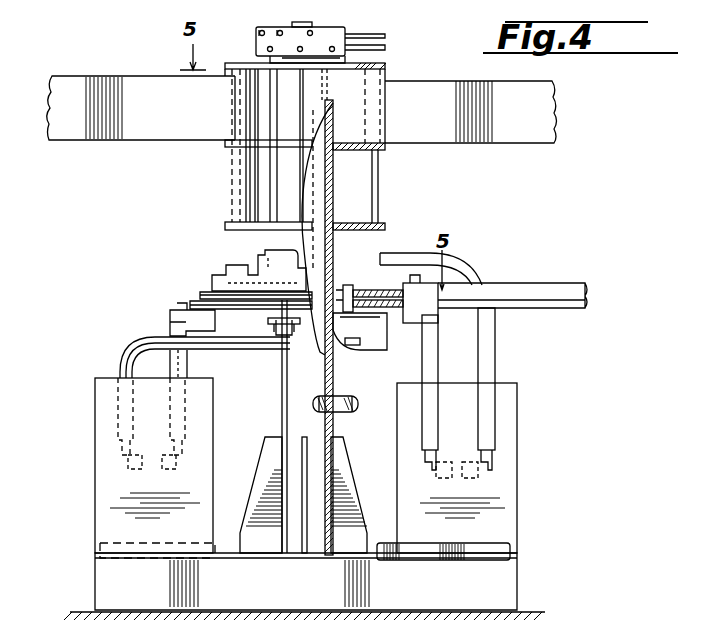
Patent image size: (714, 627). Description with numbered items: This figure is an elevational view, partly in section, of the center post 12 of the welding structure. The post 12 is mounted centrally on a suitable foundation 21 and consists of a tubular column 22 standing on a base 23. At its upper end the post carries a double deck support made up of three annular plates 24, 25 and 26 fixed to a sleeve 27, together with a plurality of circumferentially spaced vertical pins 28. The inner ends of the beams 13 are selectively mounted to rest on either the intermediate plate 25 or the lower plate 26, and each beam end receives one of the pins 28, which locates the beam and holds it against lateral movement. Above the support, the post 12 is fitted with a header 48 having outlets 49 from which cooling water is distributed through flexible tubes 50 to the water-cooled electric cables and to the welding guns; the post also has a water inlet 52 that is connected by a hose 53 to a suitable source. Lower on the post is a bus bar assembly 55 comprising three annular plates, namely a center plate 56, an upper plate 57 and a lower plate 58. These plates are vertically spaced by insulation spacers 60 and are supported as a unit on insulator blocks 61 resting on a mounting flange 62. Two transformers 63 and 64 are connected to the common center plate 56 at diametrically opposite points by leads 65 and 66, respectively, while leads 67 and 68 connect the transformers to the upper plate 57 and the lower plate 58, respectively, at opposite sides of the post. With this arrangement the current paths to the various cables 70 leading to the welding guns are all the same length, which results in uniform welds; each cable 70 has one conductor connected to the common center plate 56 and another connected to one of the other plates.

The center post 12 is at (328, 60).
The beams 13 is at (302, 109).
The foundation 21 is at (316, 602).
The tubular column 22 is at (261, 426).
The base 23 is at (306, 523).
The annular plate 24 is at (328, 69).
The intermediate plate 25 is at (379, 157).
The lower plate 26 is at (379, 218).
The sleeve 27 is at (364, 327).
The vertical pins 28 is at (307, 149).
The header 48 is at (312, 31).
The outlets 49 is at (271, 18).
The flexible tubes 50 is at (377, 25).
The water inlet 52 is at (337, 391).
The hose 53 is at (355, 391).
The bus bar assembly 55 is at (228, 270).
The center plate 56 is at (222, 300).
The upper plate 57 is at (224, 287).
The lower plate 58 is at (174, 319).
The insulation spacers 60 is at (385, 314).
The insulator blocks 61 is at (317, 342).
The mounting flange 62 is at (269, 352).
The transformer 63 is at (154, 465).
The transformer 64 is at (457, 468).
The lead 65 is at (195, 366).
The lead 66 is at (445, 396).
The lead 67 is at (184, 357).
The lead 68 is at (495, 393).
The cables 70 is at (531, 295).